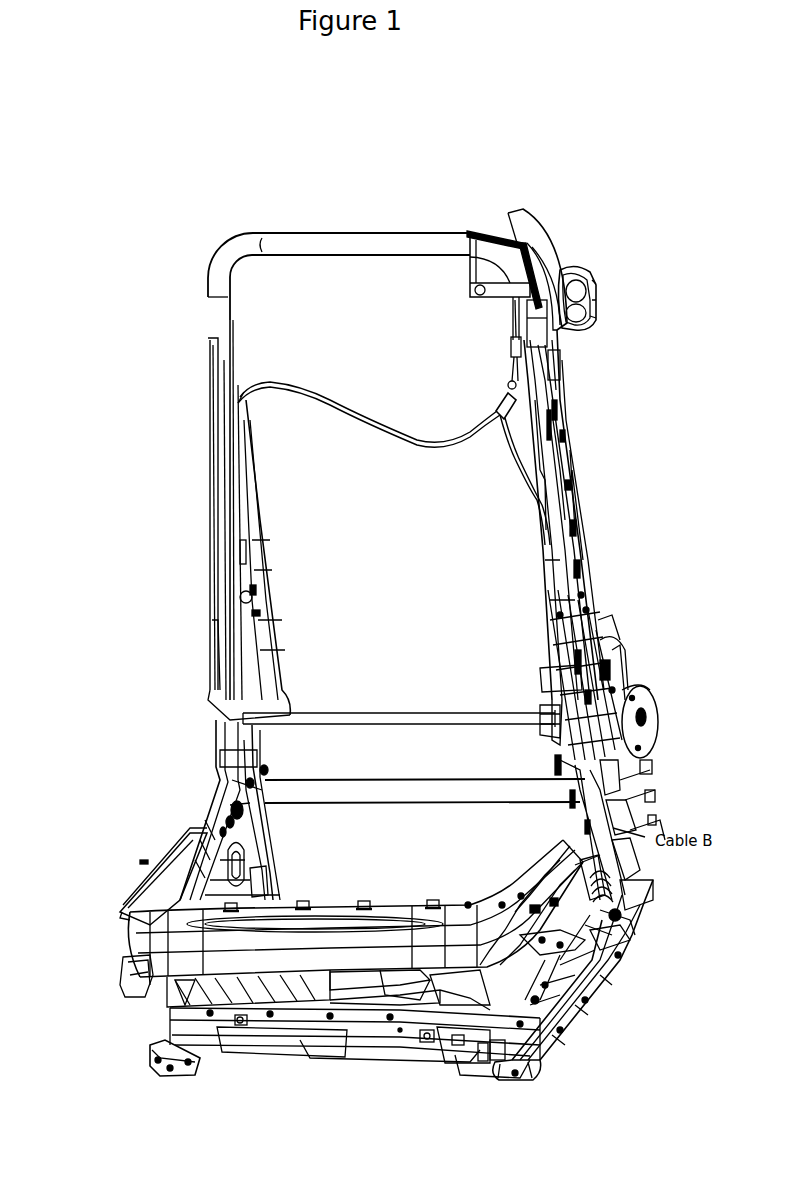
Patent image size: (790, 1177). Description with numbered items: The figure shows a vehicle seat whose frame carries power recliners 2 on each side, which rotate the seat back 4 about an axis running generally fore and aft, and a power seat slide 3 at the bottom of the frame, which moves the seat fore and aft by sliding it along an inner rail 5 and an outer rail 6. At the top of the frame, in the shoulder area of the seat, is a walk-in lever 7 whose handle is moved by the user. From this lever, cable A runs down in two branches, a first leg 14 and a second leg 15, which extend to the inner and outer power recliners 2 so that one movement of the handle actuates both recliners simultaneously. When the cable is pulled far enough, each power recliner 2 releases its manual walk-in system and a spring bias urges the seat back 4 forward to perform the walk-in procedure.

The power recliner 2 is at (207, 717).
The power seat slide 3 is at (172, 1020).
The seat back 4 is at (567, 494).
The inner rail 5 is at (182, 1076).
The outer rail 6 is at (513, 1078).
The walk-in lever 7 is at (586, 285).
The first leg 14 is at (344, 405).
The second leg 15 is at (508, 463).